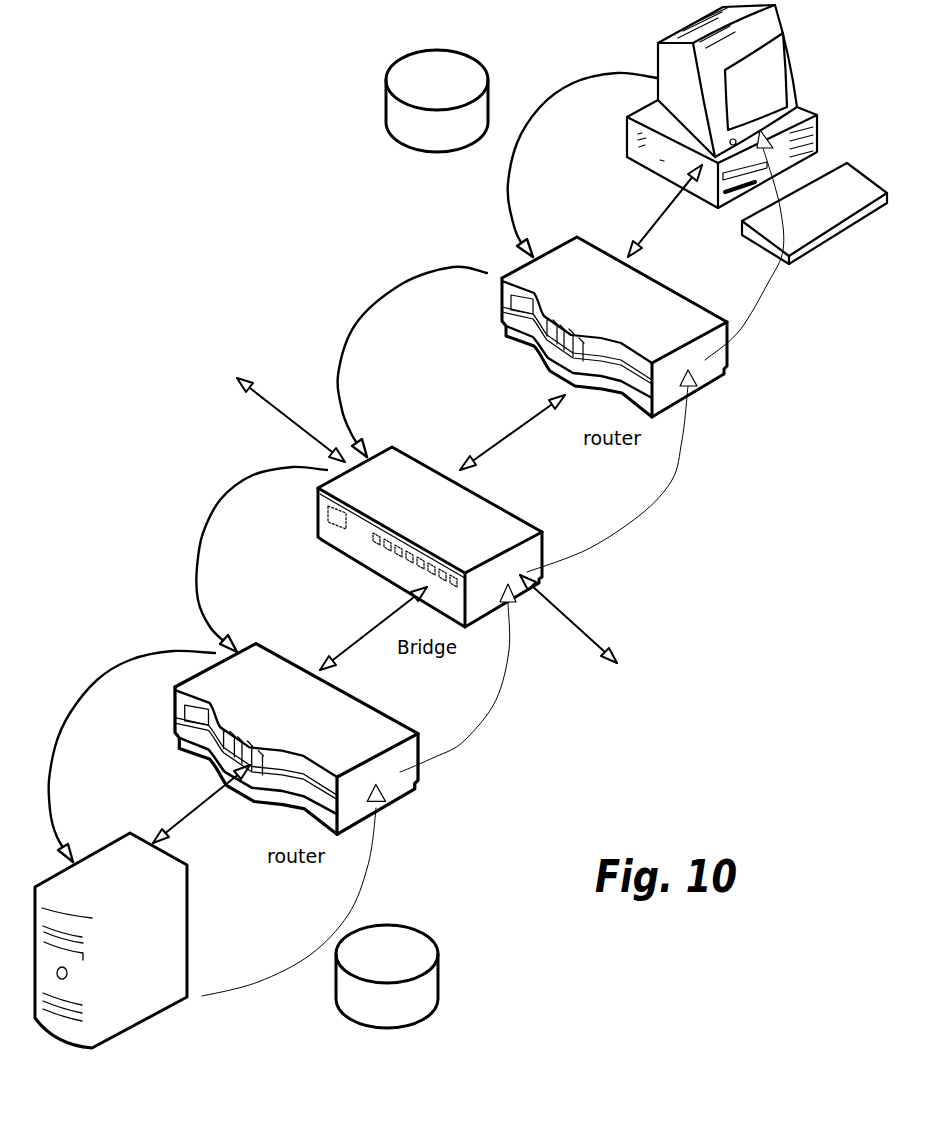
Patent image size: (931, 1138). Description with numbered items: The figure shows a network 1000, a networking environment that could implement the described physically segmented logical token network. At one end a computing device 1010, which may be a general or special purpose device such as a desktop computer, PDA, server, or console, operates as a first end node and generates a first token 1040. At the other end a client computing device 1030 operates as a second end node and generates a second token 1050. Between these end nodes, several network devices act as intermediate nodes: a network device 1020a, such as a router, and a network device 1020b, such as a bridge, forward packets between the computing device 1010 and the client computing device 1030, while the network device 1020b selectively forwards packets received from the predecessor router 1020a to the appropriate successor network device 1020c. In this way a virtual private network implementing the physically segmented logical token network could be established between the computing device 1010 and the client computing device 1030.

The network 1000 is at (308, 270).
The computing device 1010 is at (162, 952).
The network device (router) 1020a is at (322, 727).
The network device (bridge) 1020b is at (464, 529).
The network device 1020c is at (648, 314).
The client computing device 1030 is at (780, 99).
The first token 1040 is at (410, 969).
The second token 1050 is at (460, 94).